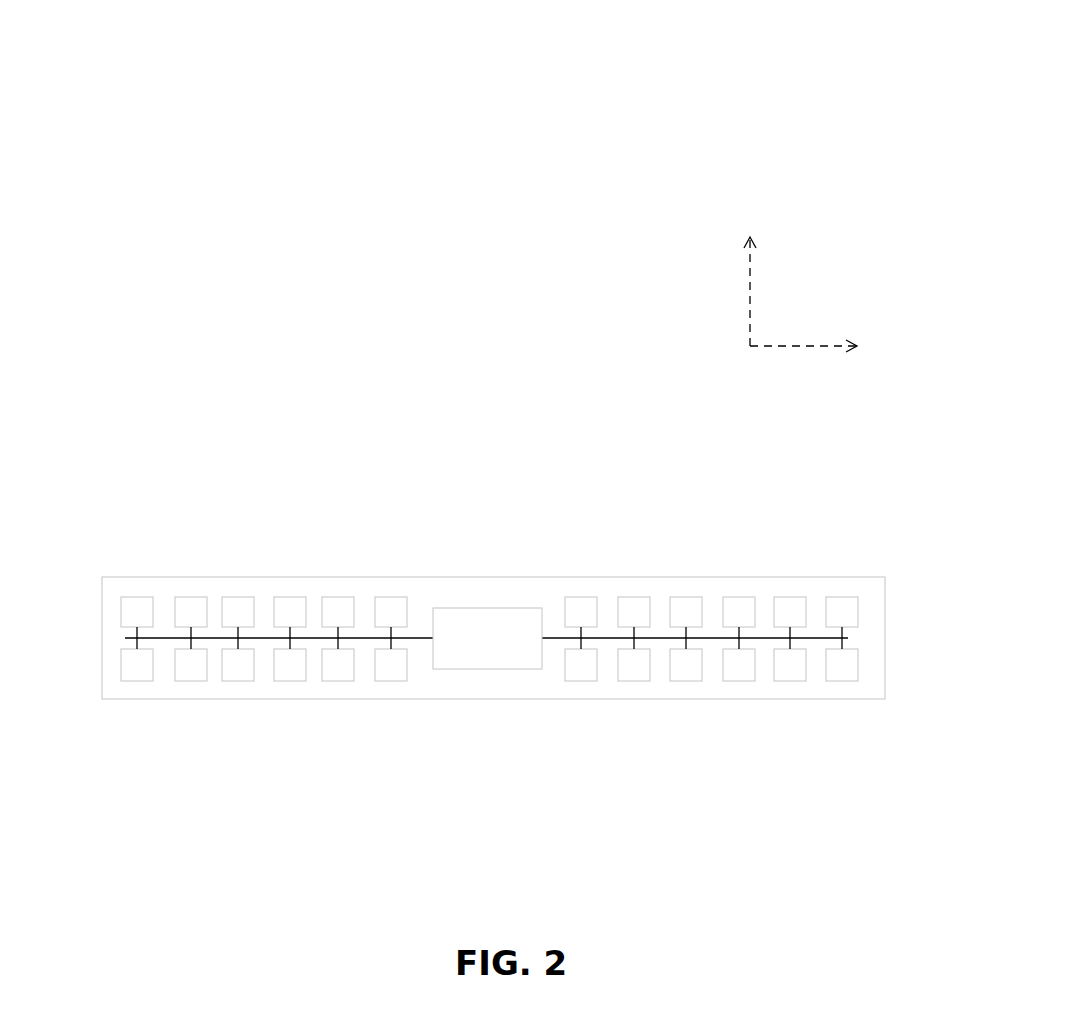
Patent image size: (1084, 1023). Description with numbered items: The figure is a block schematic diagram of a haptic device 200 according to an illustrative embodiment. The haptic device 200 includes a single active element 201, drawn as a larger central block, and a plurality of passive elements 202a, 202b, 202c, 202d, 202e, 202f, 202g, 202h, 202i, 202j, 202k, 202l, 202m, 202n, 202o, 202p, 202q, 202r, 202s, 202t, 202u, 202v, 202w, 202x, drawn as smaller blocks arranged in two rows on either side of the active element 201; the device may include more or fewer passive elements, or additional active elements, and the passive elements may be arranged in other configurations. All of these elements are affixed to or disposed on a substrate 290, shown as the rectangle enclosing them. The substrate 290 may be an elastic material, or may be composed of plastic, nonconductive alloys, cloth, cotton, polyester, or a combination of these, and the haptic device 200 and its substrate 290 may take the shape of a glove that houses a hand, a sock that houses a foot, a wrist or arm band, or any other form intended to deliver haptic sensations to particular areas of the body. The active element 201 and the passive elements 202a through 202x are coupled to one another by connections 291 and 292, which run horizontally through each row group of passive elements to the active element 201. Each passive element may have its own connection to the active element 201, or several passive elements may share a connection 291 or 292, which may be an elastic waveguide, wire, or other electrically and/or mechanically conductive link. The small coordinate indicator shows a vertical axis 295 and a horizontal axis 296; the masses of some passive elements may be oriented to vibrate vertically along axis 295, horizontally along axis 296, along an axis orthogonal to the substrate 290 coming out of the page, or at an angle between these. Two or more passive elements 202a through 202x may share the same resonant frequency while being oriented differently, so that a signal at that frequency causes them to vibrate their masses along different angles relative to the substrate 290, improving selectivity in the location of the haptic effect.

The haptic device 200 is at (596, 82).
The active element 201 is at (487, 608).
The passive element 202a is at (141, 597).
The passive element 202b is at (195, 597).
The passive element 202c is at (242, 597).
The passive element 202d is at (294, 597).
The passive element 202e is at (342, 597).
The passive element 202f is at (395, 597).
The passive element 202g is at (585, 597).
The passive element 202h is at (638, 597).
The passive element 202i is at (690, 597).
The passive element 202j is at (743, 597).
The passive element 202k is at (794, 597).
The passive element 202l is at (846, 597).
The passive element 202m is at (140, 681).
The passive element 202n is at (194, 681).
The passive element 202o is at (241, 681).
The passive element 202p is at (293, 681).
The passive element 202q is at (341, 681).
The passive element 202r is at (394, 681).
The passive element 202s is at (584, 681).
The passive element 202t is at (637, 681).
The passive element 202u is at (689, 681).
The passive element 202v is at (742, 681).
The passive element 202w is at (793, 681).
The passive element 202x is at (845, 681).
The substrate 290 is at (502, 683).
The connection 291 is at (132, 639).
The connection 292 is at (843, 639).
The axis 295 is at (750, 300).
The axis 296 is at (778, 346).